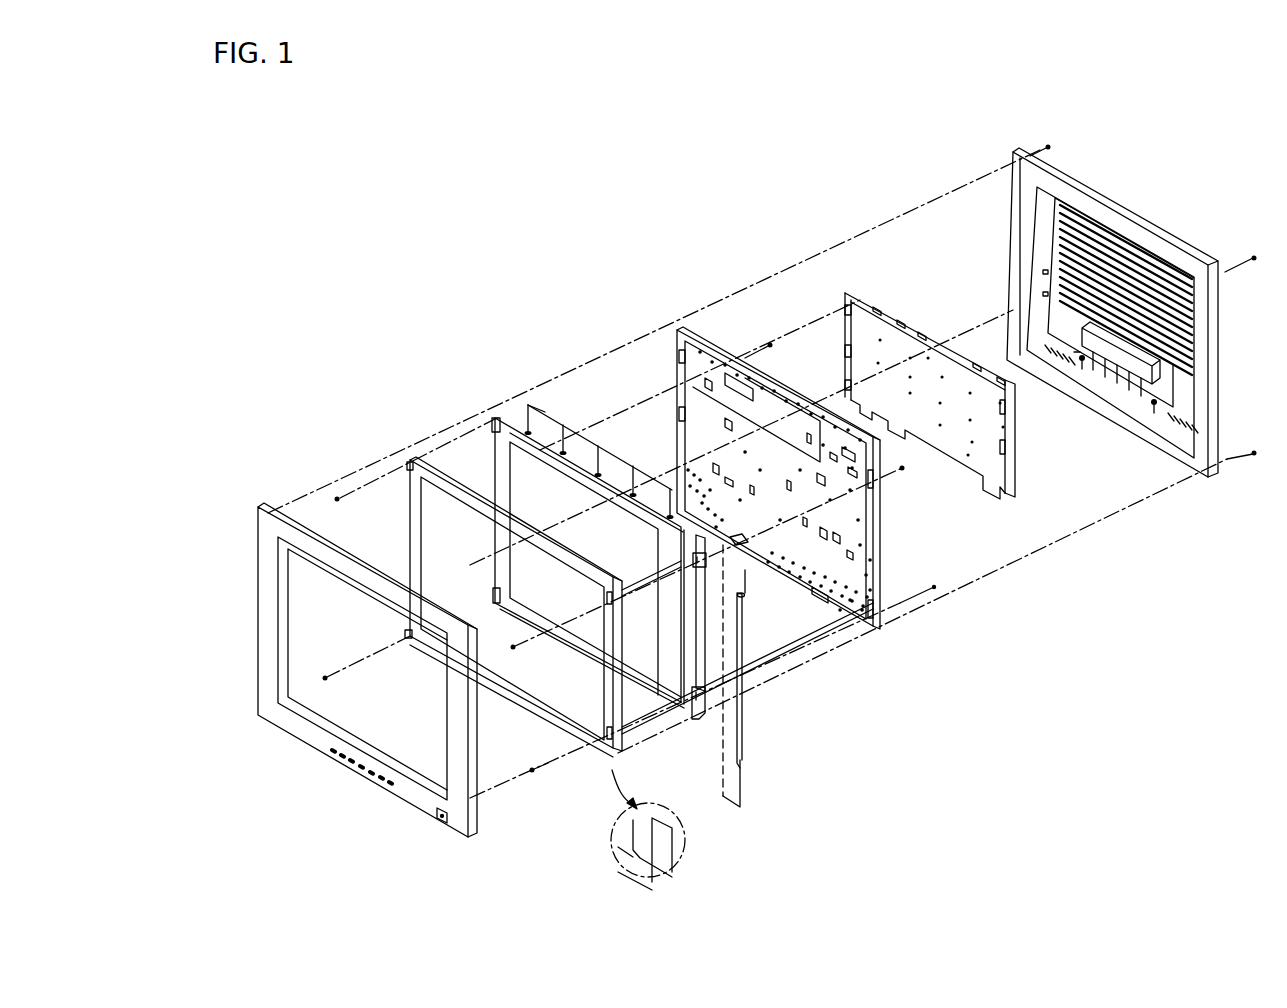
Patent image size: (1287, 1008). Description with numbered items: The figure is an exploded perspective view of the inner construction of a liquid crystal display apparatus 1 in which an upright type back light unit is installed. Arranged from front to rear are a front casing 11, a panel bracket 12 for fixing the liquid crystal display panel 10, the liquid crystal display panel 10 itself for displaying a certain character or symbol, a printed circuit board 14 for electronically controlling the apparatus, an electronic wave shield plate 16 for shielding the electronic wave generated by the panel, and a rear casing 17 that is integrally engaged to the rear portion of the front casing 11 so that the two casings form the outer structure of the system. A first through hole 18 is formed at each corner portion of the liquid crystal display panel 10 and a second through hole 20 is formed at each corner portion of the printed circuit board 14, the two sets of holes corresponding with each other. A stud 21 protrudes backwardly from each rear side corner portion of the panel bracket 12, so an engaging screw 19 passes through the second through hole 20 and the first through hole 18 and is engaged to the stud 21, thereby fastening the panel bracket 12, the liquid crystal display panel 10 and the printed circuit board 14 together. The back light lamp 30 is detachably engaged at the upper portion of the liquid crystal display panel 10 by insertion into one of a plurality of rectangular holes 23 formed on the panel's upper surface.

The liquid crystal display apparatus 1 is at (295, 168).
The liquid crystal display panel 10 is at (512, 432).
The front casing 11 is at (283, 512).
The panel bracket 12 is at (430, 462).
The printed circuit board 14 is at (705, 330).
The electronic wave shield plate 16 is at (872, 297).
The rear casing 17 is at (1087, 192).
The first through hole 18 is at (700, 722).
The engaging screw 19 is at (934, 587).
The second through hole 20 is at (875, 624).
The stud 21 is at (648, 876).
The rectangular hole 23 is at (530, 432).
The back light lamp 30 is at (753, 594).